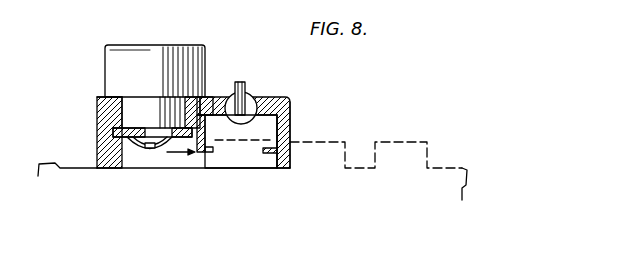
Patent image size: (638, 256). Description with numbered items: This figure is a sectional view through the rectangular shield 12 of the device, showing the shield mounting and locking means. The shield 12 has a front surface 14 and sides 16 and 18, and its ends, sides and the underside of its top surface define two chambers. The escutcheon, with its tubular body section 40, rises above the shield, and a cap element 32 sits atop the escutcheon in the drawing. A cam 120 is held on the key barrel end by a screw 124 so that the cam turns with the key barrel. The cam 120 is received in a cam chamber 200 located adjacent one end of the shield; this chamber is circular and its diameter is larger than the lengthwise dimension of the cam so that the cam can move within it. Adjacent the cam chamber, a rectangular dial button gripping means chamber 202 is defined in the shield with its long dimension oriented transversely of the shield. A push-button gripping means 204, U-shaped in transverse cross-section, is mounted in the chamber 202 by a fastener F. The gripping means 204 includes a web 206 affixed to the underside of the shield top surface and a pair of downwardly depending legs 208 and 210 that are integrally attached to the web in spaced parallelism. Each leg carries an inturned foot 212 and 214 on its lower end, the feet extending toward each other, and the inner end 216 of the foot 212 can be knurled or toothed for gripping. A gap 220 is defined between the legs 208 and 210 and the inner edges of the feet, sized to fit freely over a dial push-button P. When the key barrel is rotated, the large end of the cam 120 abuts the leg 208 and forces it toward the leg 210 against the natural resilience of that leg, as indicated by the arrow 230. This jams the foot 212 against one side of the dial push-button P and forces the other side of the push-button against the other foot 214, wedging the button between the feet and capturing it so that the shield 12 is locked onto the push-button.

The cap 32 is at (207, 52).
The leg 208 is at (216, 97).
The fastener F is at (245, 92).
The web 206 is at (262, 96).
The front surface 14 is at (282, 97).
The push-button gripping means 204 is at (300, 112).
The dial push-button P is at (330, 150).
The side 16 is at (290, 126).
The foot 214 is at (280, 176).
The leg 210 is at (259, 156).
The gap 220 is at (248, 156).
The inner end 216 is at (217, 152).
The foot 212 is at (214, 158).
The dial button gripping means chamber 202 is at (207, 157).
The arrow 230 is at (180, 153).
The screw 124 is at (145, 149).
The cam chamber 200 is at (131, 153).
The cam 120 is at (108, 167).
The shield 12 is at (97, 152).
The side 18 is at (97, 127).
The tubular body section 40 is at (133, 113).